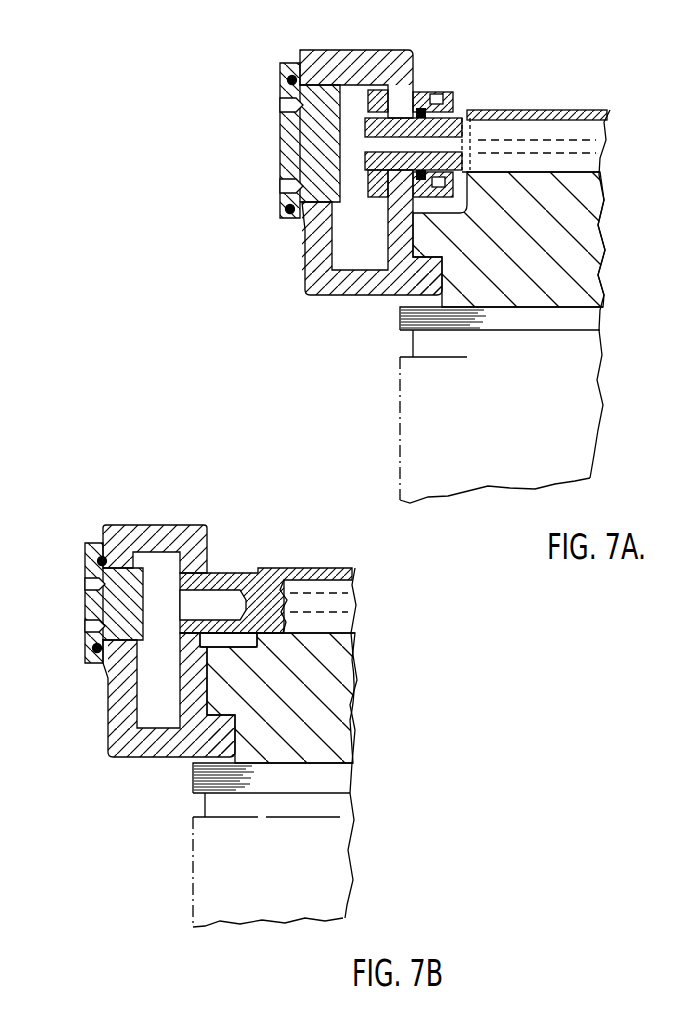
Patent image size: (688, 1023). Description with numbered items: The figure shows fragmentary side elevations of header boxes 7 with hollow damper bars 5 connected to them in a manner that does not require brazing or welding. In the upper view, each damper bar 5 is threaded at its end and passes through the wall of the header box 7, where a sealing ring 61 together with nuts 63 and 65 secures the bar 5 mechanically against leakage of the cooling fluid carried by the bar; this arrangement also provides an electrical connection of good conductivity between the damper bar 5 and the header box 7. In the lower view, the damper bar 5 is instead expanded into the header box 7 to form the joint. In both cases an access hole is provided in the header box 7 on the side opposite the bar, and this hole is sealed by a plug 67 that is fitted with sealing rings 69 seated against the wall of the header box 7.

In FIG. 7A, the header box 7 is at (356, 60).
In FIG. 7B, the header box 7 is at (150, 524).
In FIG. 7A, the hollow damper bar 5 is at (596, 132).
In FIG. 7B, the hollow damper bar 5 is at (254, 568).
In FIG. 7A, the sealing ring 61 is at (420, 98).
In FIG. 7A, the nut 63 is at (455, 94).
In FIG. 7A, the nut 65 is at (384, 192).
In FIG. 7A, the plug 67 is at (285, 124).
In FIG. 7B, the plug 67 is at (99, 600).
In FIG. 7A, the sealing ring 69 is at (282, 207).
In FIG. 7B, the sealing ring 69 is at (90, 663).